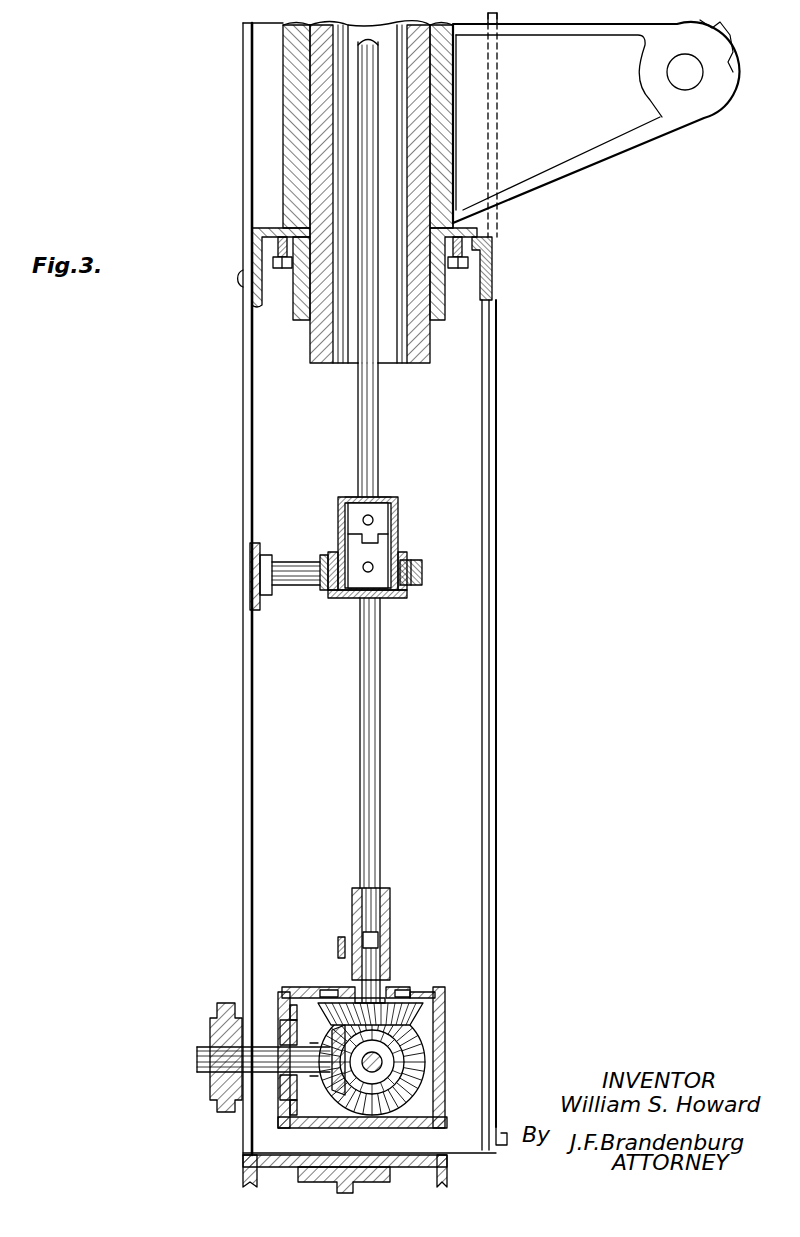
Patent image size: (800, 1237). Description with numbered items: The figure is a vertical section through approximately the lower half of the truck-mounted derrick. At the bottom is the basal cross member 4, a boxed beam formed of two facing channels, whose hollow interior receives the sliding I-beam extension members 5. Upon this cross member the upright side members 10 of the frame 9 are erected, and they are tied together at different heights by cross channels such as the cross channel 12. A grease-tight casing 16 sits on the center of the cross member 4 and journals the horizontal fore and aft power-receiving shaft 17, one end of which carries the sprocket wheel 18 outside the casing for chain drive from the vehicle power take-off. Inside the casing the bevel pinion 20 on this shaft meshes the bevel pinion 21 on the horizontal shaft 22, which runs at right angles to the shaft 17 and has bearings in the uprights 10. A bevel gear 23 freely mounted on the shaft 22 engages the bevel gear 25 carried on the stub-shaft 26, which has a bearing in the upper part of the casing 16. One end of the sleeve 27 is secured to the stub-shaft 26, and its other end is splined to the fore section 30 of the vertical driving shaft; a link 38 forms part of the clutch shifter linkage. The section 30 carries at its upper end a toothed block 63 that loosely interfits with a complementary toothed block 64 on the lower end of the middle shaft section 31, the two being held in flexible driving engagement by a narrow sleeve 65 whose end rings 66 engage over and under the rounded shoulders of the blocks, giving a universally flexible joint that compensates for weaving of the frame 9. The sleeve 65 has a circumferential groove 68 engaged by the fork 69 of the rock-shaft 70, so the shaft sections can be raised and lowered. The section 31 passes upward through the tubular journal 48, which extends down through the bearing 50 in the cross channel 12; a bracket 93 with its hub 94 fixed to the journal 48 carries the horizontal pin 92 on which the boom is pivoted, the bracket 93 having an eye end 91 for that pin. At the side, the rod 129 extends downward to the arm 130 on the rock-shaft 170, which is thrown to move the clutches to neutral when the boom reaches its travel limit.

The basal cross member 4 is at (243, 1177).
The I-beam extension members 5 is at (376, 141).
The frame 9 is at (240, 472).
The upright side members 10 is at (265, 642).
The cross channel 12 is at (495, 218).
The grease-tight casing 16 is at (445, 1025).
The power-receiving shaft 17 is at (262, 1032).
The sprocket wheel 18 is at (215, 1085).
The bevel pinion 20 is at (340, 1085).
The bevel pinion 21 is at (413, 1060).
The horizontal shaft 22 is at (403, 1095).
The bevel gear 23 is at (423, 1042).
The bevel gear 25 is at (425, 990).
The stub-shaft 26 is at (372, 975).
The sleeve 27 is at (390, 912).
The fore shaft section 30 is at (362, 755).
The middle shaft section 31 is at (378, 430).
The link 38 is at (336, 945).
The tubular journal 48 is at (312, 190).
The bearing 50 is at (293, 310).
The toothed block 63 is at (375, 575).
The toothed block 64 is at (392, 512).
The sleeve 65 is at (340, 510).
The end rings 66 is at (392, 497).
The circumferential groove 68 is at (325, 598).
The fork 69 is at (424, 568).
The rock-shaft 70 is at (298, 562).
The arm head 91 is at (642, 40).
The horizontal pin 92 is at (688, 82).
The bracket 93 is at (598, 150).
The hub 94 is at (288, 78).
The rod 129 is at (497, 392).
The arm 130 is at (488, 1128).
The rock-shaft 170 is at (503, 1150).